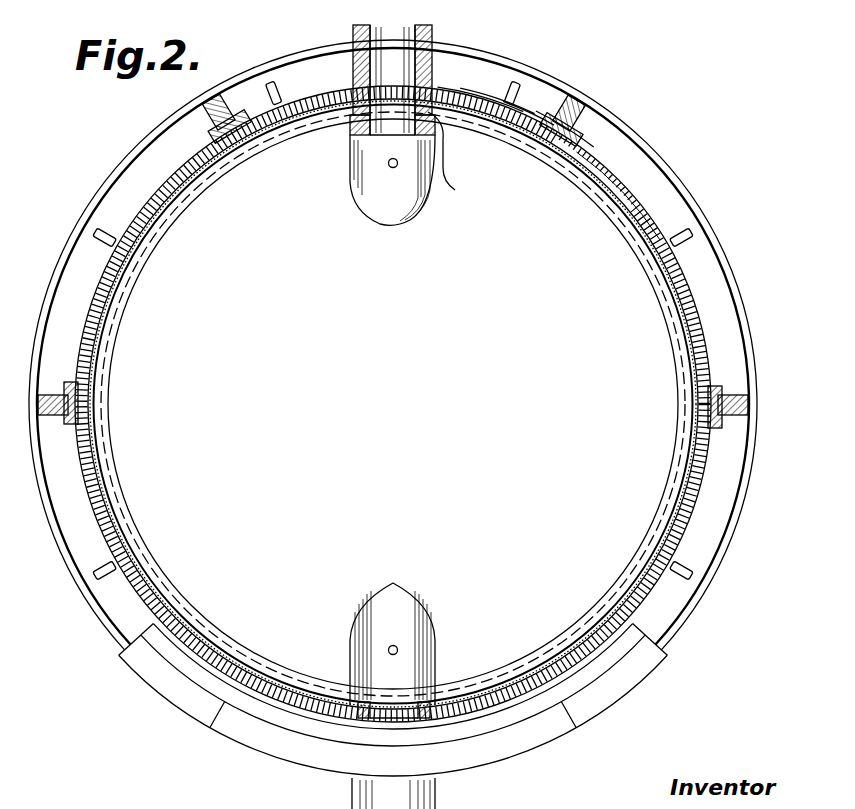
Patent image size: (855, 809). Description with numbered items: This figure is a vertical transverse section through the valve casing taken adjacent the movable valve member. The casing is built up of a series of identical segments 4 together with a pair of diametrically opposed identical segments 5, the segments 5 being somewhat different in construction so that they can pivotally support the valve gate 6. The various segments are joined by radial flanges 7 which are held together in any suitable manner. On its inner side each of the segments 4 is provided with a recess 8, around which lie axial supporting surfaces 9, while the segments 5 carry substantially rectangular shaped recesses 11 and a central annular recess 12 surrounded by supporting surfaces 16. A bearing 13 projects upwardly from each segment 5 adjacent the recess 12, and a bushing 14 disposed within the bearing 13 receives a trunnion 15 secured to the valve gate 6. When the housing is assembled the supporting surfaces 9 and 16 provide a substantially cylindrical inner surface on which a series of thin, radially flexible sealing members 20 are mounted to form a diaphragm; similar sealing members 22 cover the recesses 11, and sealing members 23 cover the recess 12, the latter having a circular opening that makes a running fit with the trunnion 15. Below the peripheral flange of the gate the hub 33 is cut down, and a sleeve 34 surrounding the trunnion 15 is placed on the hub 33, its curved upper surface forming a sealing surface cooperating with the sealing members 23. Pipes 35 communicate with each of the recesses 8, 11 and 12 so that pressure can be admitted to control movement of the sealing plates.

The segments 4 is at (113, 202).
The segments 5 is at (467, 60).
The valve gate 6 is at (620, 247).
The radial flanges 7 is at (565, 128).
The recess 8 is at (687, 300).
The axial supporting surfaces 9 is at (562, 133).
The rectangular shaped recesses 11 is at (548, 100).
The central annular recess 12 is at (458, 85).
The bearing 13 is at (430, 37).
The bushing 14 is at (355, 38).
The trunnion 15 is at (390, 33).
The supporting surfaces 16 is at (467, 107).
The sealing members 20 is at (610, 187).
The sealing members 22 is at (517, 120).
The sealing members 23 is at (347, 103).
The hub 33 is at (370, 187).
The sleeve 34 is at (452, 157).
The pipes 35 is at (278, 88).